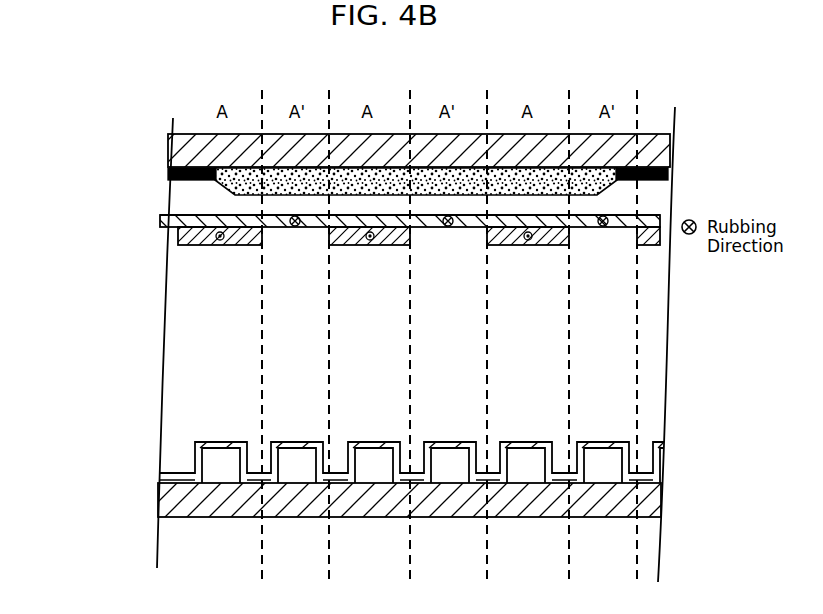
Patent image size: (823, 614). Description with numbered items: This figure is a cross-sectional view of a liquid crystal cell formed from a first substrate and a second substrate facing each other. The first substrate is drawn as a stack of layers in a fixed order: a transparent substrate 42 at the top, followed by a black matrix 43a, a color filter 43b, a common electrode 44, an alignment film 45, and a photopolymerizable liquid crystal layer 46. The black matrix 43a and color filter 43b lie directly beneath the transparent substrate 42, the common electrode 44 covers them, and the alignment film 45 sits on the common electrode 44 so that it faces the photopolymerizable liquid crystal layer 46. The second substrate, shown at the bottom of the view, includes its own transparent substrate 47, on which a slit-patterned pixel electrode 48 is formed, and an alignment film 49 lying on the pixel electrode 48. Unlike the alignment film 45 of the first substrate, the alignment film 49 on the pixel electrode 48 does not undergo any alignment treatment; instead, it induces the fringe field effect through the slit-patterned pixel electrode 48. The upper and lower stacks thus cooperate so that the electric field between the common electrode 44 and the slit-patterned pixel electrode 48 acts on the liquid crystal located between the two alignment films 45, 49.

The transparent substrate 42 is at (172, 152).
The black matrix 43a is at (166, 174).
The color filter 43b is at (197, 188).
The common electrode 44 is at (175, 203).
The alignment film 45 is at (167, 228).
The photopolymerizable liquid crystal layer 46 is at (200, 238).
The transparent substrate 47 is at (170, 503).
The slit-patterned pixel electrode 48 is at (218, 467).
The alignment film 49 is at (197, 443).